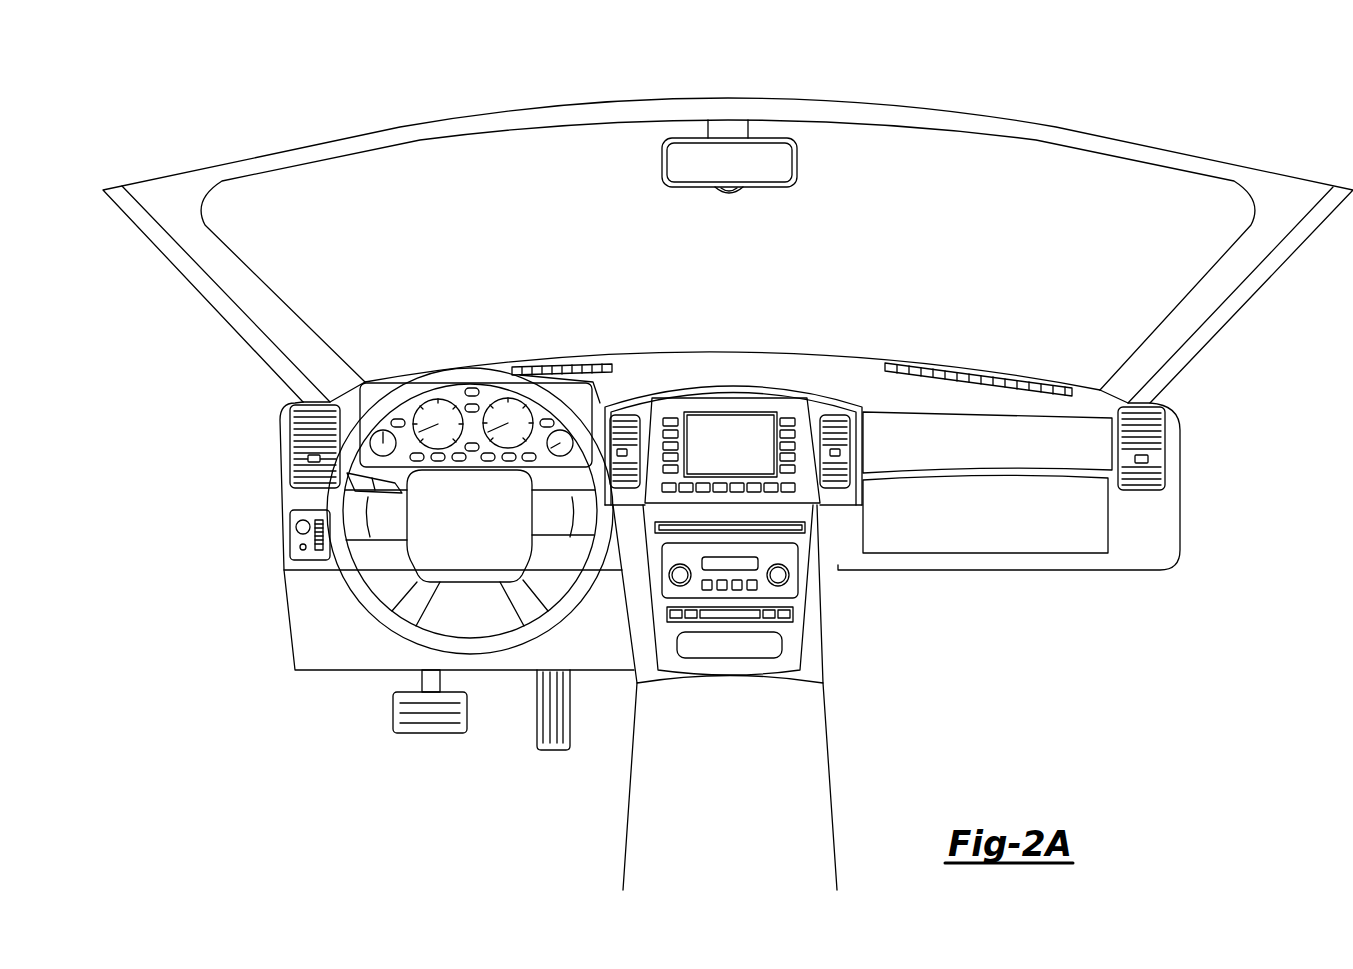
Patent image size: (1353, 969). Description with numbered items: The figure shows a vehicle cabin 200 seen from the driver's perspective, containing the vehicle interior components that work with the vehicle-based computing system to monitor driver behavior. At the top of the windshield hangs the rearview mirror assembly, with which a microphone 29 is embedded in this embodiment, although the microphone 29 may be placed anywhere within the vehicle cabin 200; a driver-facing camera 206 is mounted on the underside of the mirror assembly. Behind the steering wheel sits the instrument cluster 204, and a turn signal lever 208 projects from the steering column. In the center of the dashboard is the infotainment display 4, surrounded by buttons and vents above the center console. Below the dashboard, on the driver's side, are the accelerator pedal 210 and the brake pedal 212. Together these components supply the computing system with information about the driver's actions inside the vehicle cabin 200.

The vehicle cabin 200 is at (1207, 103).
The instrument cluster 204 is at (452, 420).
The driver-facing camera 206 is at (728, 196).
The microphone 29 is at (757, 193).
The infotainment display 4 is at (757, 435).
The turn signal lever 208 is at (348, 472).
The accelerator pedal 210 is at (555, 750).
The brake pedal 212 is at (393, 715).